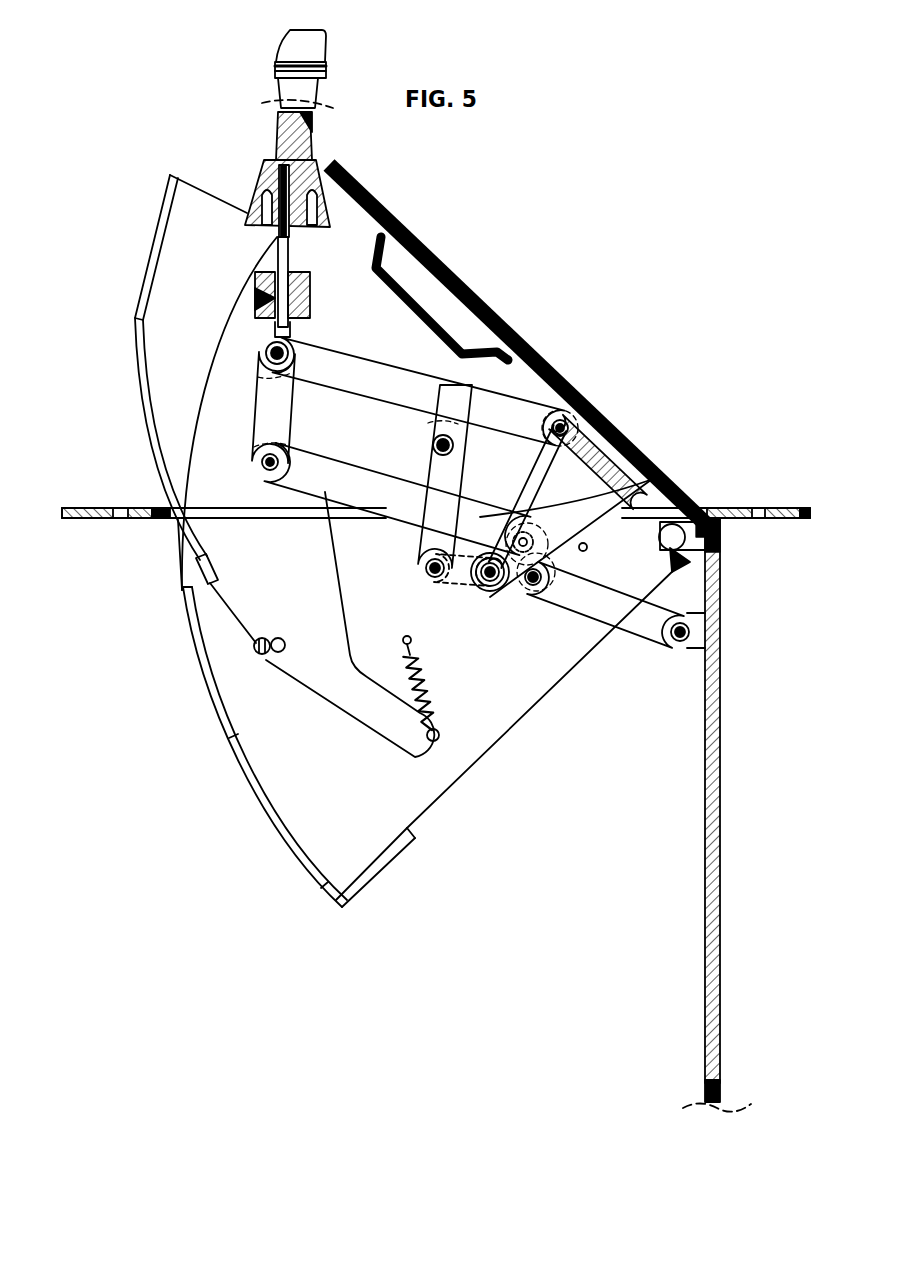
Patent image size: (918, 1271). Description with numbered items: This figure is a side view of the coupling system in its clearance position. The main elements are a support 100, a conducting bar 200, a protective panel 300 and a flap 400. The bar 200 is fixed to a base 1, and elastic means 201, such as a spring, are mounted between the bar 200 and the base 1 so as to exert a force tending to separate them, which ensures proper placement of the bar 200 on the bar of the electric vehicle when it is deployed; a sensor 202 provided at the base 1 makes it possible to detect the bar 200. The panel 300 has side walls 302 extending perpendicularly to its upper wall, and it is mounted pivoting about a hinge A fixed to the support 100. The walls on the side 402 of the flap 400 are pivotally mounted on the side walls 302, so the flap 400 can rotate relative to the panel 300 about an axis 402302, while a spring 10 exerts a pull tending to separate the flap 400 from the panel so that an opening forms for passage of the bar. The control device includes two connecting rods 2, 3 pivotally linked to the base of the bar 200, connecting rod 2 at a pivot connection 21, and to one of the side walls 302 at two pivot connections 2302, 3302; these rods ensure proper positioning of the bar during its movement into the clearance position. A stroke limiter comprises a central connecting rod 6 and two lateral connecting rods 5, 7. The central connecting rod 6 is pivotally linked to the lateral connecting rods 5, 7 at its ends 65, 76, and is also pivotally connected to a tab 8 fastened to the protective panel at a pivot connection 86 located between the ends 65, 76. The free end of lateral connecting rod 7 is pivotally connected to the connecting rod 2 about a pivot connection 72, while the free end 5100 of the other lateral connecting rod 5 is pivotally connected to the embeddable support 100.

The support 100 is at (720, 787).
The conducting bar 200 is at (282, 48).
The elastic means 201 is at (290, 162).
The sensor 202 is at (305, 300).
The panel 300 is at (470, 270).
The flap 400 is at (135, 408).
The side walls of the flap 402 is at (372, 707).
The axis 402302 is at (262, 658).
The side walls 302 is at (415, 793).
The base 1 is at (265, 414).
The connecting rod 2 is at (384, 380).
The pivot connection 21 is at (283, 352).
The connecting rod 3 is at (385, 505).
The lateral connecting rod 5 is at (593, 602).
The free end 5100 is at (680, 638).
The central connecting rod 6 is at (464, 585).
The end 65 is at (575, 570).
The lateral connecting rod 7 is at (450, 470).
The pivot connection 72 is at (440, 447).
The end 76 is at (435, 575).
The tab 8 is at (530, 478).
The pivot connection 86 is at (490, 578).
The spring 10 is at (427, 690).
The pivot connection 2302 is at (568, 428).
The pivot connection 3302 is at (620, 512).
The hinge A is at (678, 540).